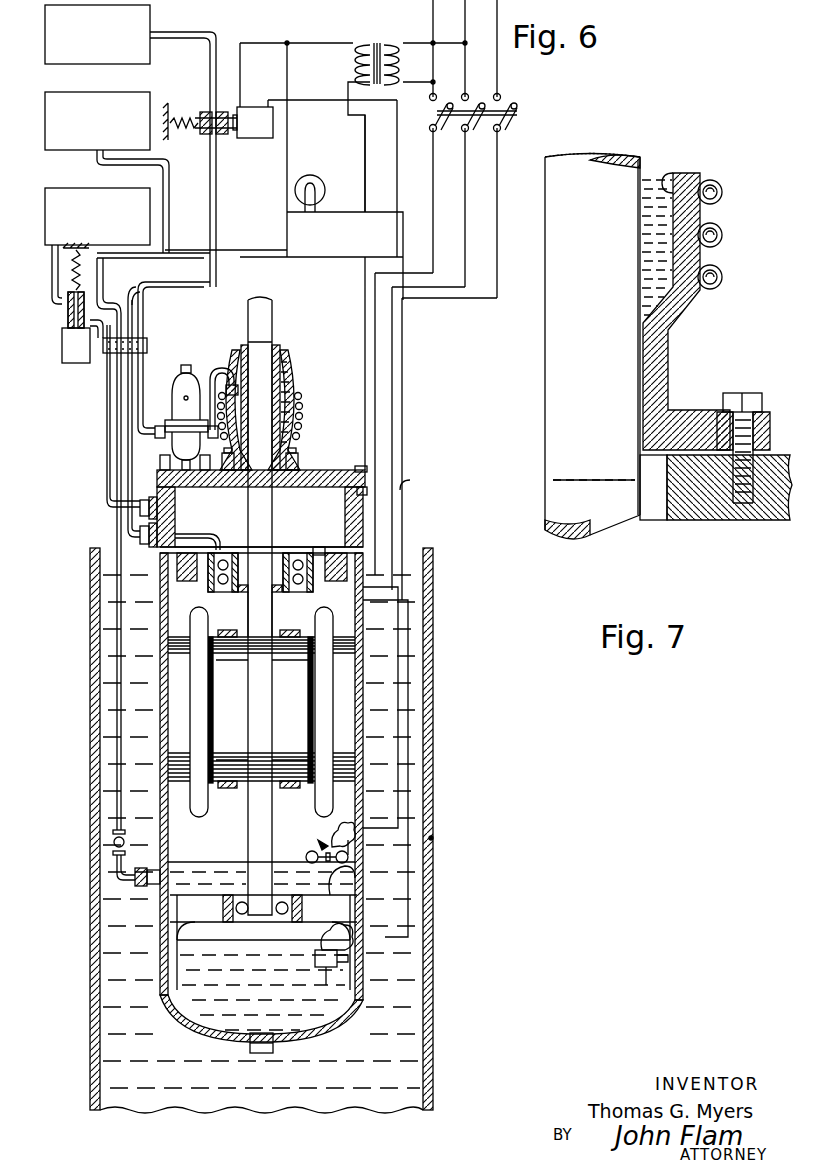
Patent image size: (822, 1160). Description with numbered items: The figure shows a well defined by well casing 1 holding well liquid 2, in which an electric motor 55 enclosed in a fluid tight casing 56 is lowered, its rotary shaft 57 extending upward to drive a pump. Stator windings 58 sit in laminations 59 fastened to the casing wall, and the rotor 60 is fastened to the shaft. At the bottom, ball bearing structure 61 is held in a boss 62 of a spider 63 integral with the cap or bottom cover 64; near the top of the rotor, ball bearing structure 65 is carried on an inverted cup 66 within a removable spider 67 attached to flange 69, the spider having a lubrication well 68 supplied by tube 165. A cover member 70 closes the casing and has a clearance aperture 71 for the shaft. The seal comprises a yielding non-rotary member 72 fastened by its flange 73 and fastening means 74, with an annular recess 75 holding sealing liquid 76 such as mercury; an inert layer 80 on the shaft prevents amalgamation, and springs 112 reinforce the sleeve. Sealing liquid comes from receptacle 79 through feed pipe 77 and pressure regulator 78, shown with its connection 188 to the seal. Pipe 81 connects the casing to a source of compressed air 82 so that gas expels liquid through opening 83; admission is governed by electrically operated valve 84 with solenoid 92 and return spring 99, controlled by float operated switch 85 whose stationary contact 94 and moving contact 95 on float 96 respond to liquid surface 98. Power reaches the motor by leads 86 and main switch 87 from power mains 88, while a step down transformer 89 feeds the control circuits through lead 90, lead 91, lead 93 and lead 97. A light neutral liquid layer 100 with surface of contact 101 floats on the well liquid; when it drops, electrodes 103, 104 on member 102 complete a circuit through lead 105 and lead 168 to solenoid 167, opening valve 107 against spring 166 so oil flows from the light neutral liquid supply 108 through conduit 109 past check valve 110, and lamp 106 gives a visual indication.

In FIG. 6, the source of compressed air 82 is at (152, 15).
In FIG. 6, the receptacle 79 is at (122, 92).
In FIG. 6, the light neutral liquid supply 108 is at (150, 222).
In FIG. 6, the lead 91 is at (268, 43).
In FIG. 6, the step down transformer 89 is at (388, 43).
In FIG. 6, the power mains 88 is at (505, 90).
In FIG. 6, the main switch 87 is at (518, 124).
In FIG. 6, the lead 90 is at (364, 146).
In FIG. 6, the lamp 106 is at (318, 180).
In FIG. 6, the lead 168 is at (290, 228).
In FIG. 6, the spring 99 is at (180, 120).
In FIG. 6, the electrically operated valve 84 is at (222, 135).
In FIG. 6, the solenoid 92 is at (258, 140).
In FIG. 6, the spring 166 is at (84, 272).
In FIG. 6, the solenoid 167 is at (85, 360).
In FIG. 6, the electrically operated valve 107 is at (60, 318).
In FIG. 6, the feed pipe 77 is at (148, 322).
In FIG. 6, the pressure regulator 78 is at (168, 379).
In FIG. 6, the conduit 188 is at (210, 372).
In FIG. 6, the rotary shaft 57 is at (275, 314).
In FIG. 7, the rotary shaft 57 is at (612, 535).
In FIG. 6, the inert layer 80 is at (282, 356).
In FIG. 7, the inert layer 80 is at (545, 424).
In FIG. 6, the non-rotary member 72 is at (292, 386).
In FIG. 7, the non-rotary member 72 is at (668, 357).
In FIG. 6, the sealing liquid 76 is at (300, 404).
In FIG. 7, the sealing liquid 76 is at (650, 238).
In FIG. 6, the annular recess 75 is at (302, 428).
In FIG. 7, the annular recess 75 is at (668, 176).
In FIG. 6, the fastening means 74 is at (298, 455).
In FIG. 7, the fastening means 74 is at (752, 393).
In FIG. 6, the flange 73 is at (304, 470).
In FIG. 7, the flange 73 is at (770, 425).
In FIG. 6, the cover member 70 is at (336, 476).
In FIG. 7, the cover member 70 is at (770, 525).
In FIG. 6, the clearance aperture 71 is at (247, 490).
In FIG. 7, the clearance aperture 71 is at (662, 520).
In FIG. 6, the leads 86 is at (392, 445).
In FIG. 6, the lead 93 is at (400, 490).
In FIG. 6, the pipe 81 is at (122, 452).
In FIG. 6, the tube 165 is at (110, 478).
In FIG. 6, the conduit 109 is at (115, 533).
In FIG. 6, the inverted cup 66 is at (228, 545).
In FIG. 6, the ball bearing structure 65 is at (293, 548).
In FIG. 6, the removable spider 67 is at (332, 548).
In FIG. 6, the flange 69 is at (365, 572).
In FIG. 6, the well 68 is at (262, 570).
In FIG. 6, the well casing 1 is at (433, 609).
In FIG. 6, the well liquid 2 is at (415, 812).
In FIG. 6, the lead 105 is at (410, 778).
In FIG. 6, the cap or bottom cover 64 is at (425, 980).
In FIG. 6, the rotor 60 is at (300, 675).
In FIG. 6, the electric motor 55 is at (351, 689).
In FIG. 6, the stator or primary windings 58 is at (330, 717).
In FIG. 6, the fluid tight casing 56 is at (363, 722).
In FIG. 6, the laminations 59 is at (347, 755).
In FIG. 6, the stationary contact 94 is at (431, 838).
In FIG. 6, the liquid surface 98 is at (206, 866).
In FIG. 6, the check valve 110 is at (113, 845).
In FIG. 6, the float operated switch 85 is at (314, 838).
In FIG. 6, the float 96 is at (306, 856).
In FIG. 6, the lead 97 is at (355, 872).
In FIG. 6, the moving contact 95 is at (356, 890).
In FIG. 6, the ball bearing structure 61 is at (240, 922).
In FIG. 6, the boss 62 is at (232, 925).
In FIG. 6, the spider 63 is at (210, 937).
In FIG. 6, the light neutral liquid layer 100 is at (178, 957).
In FIG. 6, the surface of contact 101 is at (205, 988).
In FIG. 6, the electrode member 102 is at (340, 960).
In FIG. 6, the electrode 103 is at (326, 982).
In FIG. 6, the electrode 104 is at (335, 975).
In FIG. 6, the opening 83 is at (263, 1053).
In FIG. 7, the springs 112 is at (723, 280).